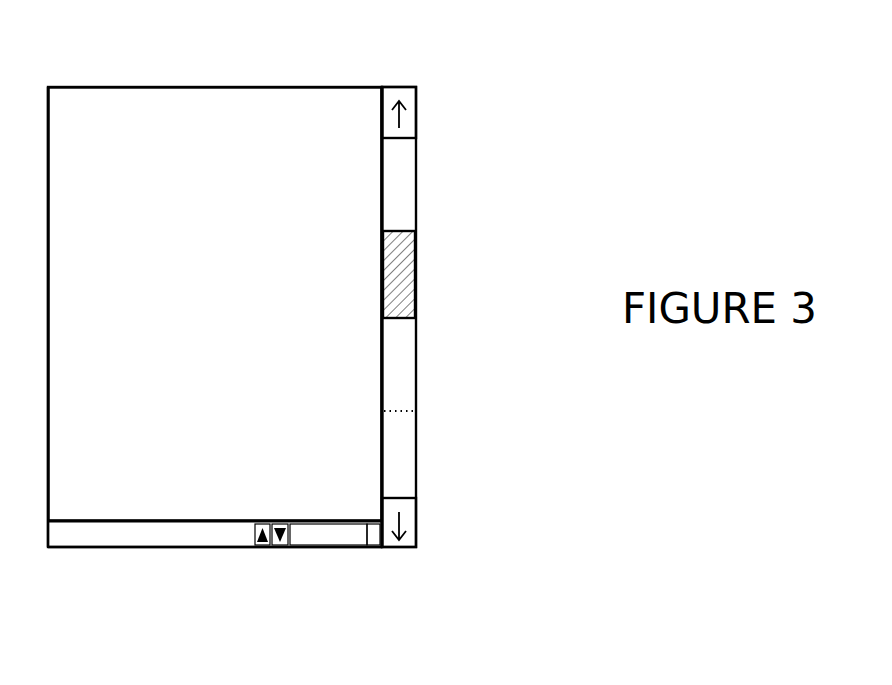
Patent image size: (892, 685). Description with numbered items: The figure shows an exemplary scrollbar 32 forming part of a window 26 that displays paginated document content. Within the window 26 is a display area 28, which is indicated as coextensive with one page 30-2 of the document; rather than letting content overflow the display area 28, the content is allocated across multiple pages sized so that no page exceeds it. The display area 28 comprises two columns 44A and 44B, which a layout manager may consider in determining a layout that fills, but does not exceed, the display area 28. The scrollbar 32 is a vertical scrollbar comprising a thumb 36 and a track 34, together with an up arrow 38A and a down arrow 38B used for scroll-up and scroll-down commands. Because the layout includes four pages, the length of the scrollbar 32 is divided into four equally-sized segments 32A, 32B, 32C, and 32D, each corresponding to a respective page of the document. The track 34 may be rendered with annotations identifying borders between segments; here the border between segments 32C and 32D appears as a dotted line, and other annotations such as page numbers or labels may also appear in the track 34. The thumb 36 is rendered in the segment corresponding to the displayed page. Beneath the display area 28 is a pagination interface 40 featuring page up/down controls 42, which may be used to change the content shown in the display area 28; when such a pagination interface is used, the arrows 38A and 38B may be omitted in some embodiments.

The window 26 is at (233, 88).
The display area 28 is at (63, 107).
The page 30-2 is at (237, 293).
The scrollbar 32 is at (376, 168).
The segment 32A is at (430, 140).
The segment 32B is at (430, 232).
The segment 32C is at (430, 320).
The segment 32D is at (430, 412).
The track 34 is at (412, 386).
The thumb 36 is at (399, 231).
The up arrow 38A is at (399, 87).
The down arrow 38B is at (418, 522).
The pagination interface 40 is at (364, 547).
The page up/down controls 42 is at (272, 525).
The column 44A is at (215, 570).
The column 44B is at (380, 570).